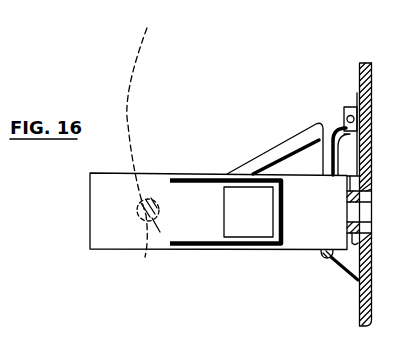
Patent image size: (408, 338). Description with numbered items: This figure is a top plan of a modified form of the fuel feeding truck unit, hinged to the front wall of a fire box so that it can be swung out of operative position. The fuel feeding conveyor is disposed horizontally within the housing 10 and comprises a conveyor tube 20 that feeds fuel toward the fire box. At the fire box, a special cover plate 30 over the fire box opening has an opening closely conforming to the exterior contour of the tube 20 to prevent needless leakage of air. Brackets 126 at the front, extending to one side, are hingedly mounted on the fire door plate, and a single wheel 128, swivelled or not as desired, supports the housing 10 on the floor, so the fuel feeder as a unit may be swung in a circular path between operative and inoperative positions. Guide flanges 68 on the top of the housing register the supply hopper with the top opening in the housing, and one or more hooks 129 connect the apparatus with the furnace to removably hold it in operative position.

The housing 10 is at (90, 210).
The guide flanges 68 is at (205, 178).
The brackets 126 is at (319, 161).
The cover plate 30 is at (353, 185).
The conveyor tube 20 is at (362, 213).
The single wheel 128 is at (143, 154).
The hooks 129 is at (328, 262).